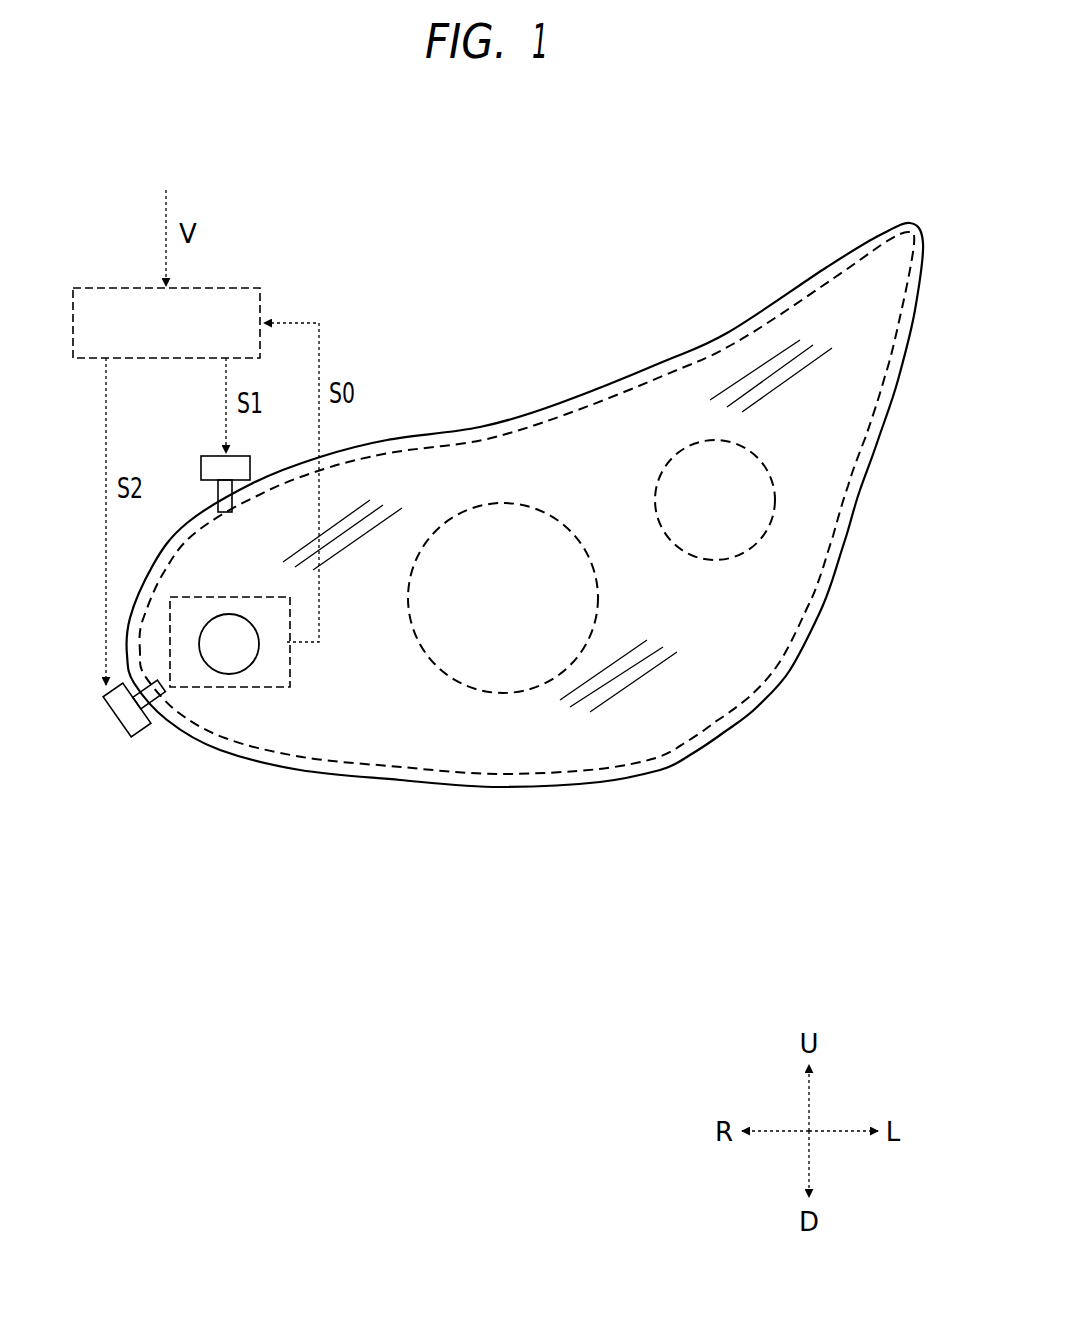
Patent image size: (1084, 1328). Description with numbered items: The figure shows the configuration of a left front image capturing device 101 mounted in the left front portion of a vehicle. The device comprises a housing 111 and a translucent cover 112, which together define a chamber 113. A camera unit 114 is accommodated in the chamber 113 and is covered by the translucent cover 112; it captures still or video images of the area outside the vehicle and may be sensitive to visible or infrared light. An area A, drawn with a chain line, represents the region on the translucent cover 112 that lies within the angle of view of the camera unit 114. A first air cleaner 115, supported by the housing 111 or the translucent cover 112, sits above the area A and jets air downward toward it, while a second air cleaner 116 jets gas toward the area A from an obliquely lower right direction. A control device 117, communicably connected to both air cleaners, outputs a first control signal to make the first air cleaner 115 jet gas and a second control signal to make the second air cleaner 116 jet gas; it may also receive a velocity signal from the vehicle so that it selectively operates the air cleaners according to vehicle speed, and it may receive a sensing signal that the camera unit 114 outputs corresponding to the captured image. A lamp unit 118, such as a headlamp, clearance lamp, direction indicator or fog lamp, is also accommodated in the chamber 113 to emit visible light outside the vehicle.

The left front image capturing device 101 is at (498, 257).
The housing 111 is at (433, 771).
The translucent cover 112 is at (490, 737).
The chamber 113 is at (375, 702).
The camera unit 114 is at (229, 660).
The first air cleaner 115 is at (200, 462).
The second air cleaner 116 is at (124, 724).
The control device 117 is at (262, 303).
The lamp unit 118 is at (487, 502).
The area A is at (272, 666).